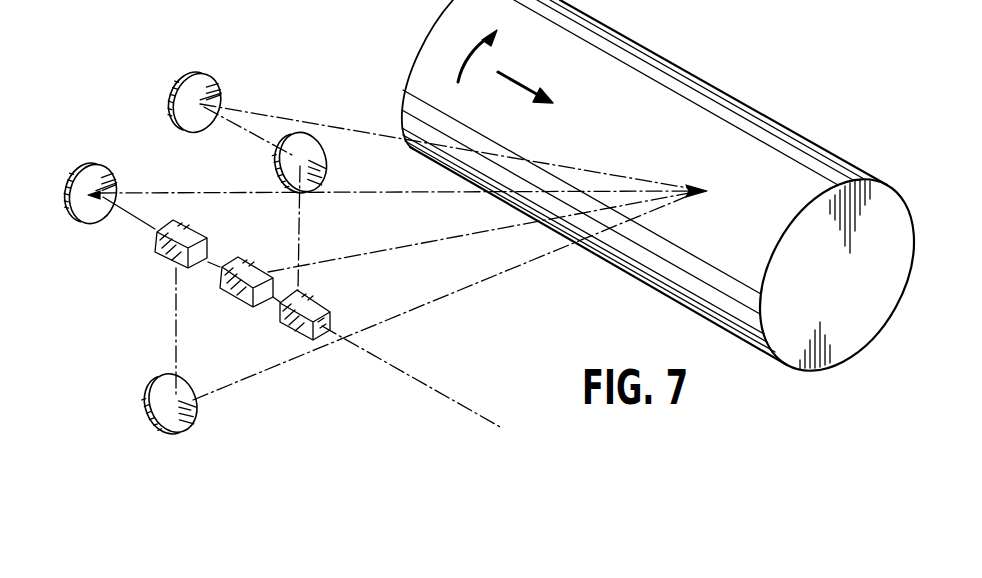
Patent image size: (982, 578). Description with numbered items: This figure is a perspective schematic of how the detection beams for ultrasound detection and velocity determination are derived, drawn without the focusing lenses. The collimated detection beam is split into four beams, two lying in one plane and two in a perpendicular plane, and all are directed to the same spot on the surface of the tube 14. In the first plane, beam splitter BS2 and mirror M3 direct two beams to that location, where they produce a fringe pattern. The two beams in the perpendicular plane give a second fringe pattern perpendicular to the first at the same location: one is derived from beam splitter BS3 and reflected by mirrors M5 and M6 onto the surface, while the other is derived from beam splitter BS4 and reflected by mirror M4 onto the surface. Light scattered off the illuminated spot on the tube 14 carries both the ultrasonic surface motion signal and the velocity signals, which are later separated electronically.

The tube 14 is at (784, 215).
The mirror M3 is at (90, 167).
The mirror M4 is at (162, 424).
The mirror M5 is at (325, 157).
The mirror M6 is at (173, 85).
The beam splitter BS2 is at (238, 296).
The beam splitter BS3 is at (320, 305).
The beam splitter BS4 is at (155, 240).